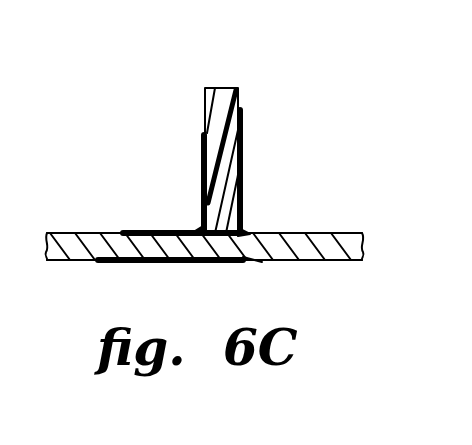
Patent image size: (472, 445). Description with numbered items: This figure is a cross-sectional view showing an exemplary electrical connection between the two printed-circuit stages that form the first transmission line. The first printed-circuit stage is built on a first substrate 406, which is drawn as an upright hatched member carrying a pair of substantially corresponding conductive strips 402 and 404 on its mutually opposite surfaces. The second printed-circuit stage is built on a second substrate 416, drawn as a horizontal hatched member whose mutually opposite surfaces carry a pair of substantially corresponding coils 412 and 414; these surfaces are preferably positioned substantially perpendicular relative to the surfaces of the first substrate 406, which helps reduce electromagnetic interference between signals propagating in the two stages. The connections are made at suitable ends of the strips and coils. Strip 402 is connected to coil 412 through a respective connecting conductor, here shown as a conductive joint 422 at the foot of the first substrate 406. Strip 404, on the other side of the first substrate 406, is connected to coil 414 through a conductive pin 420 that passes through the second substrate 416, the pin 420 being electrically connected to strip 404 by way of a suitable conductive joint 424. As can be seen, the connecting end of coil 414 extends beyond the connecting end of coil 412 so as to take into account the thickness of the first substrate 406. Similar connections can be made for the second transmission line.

The conductive strip 402 is at (203, 143).
The conductive strip 404 is at (243, 120).
The first substrate 406 is at (219, 88).
The coil 412 is at (133, 232).
The coil 414 is at (145, 261).
The second substrate 416 is at (353, 233).
The conductive pin 420 is at (253, 260).
The conductive joint 422 is at (203, 229).
The conductive joint 424 is at (244, 232).